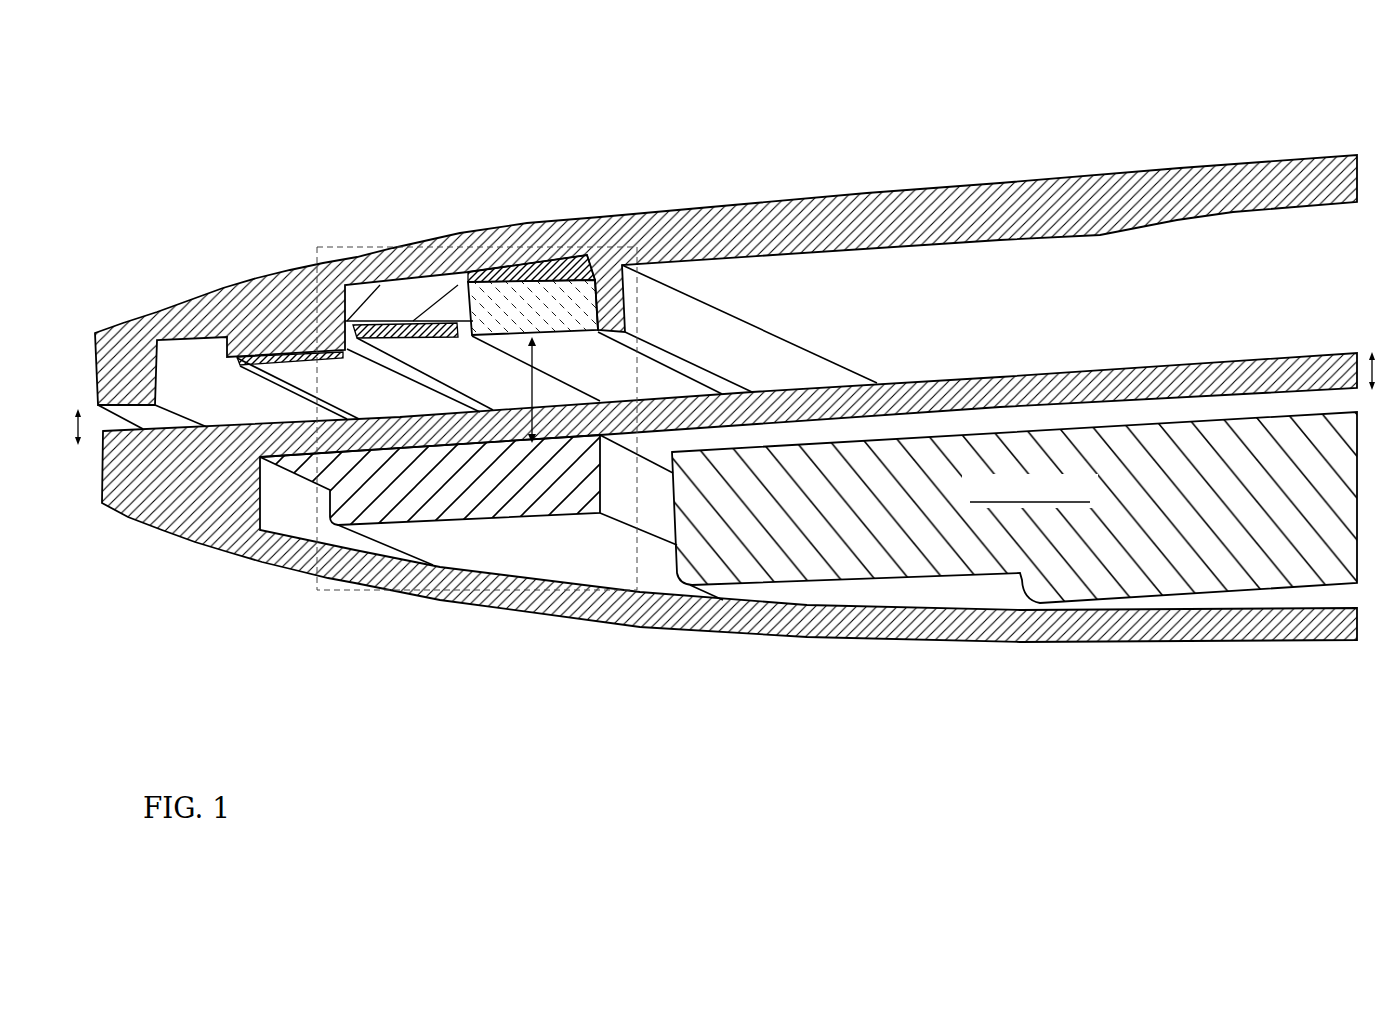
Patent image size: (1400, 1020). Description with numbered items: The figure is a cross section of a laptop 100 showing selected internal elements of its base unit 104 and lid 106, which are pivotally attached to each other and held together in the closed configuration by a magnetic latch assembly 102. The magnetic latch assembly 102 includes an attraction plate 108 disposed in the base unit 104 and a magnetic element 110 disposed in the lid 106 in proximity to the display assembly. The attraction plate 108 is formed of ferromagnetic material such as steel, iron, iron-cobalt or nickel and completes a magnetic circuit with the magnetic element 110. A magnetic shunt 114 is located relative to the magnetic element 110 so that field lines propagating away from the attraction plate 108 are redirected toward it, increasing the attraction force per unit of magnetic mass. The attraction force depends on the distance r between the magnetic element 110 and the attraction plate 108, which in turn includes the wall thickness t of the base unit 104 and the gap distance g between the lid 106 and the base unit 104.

The laptop 100 is at (224, 155).
The magnetic latch assembly 102 is at (353, 245).
The base unit 104 is at (170, 489).
The lid 106 is at (258, 319).
The attraction plate 108 is at (427, 492).
The magnetic element 110 is at (510, 315).
The magnetic shunt 114 is at (540, 262).